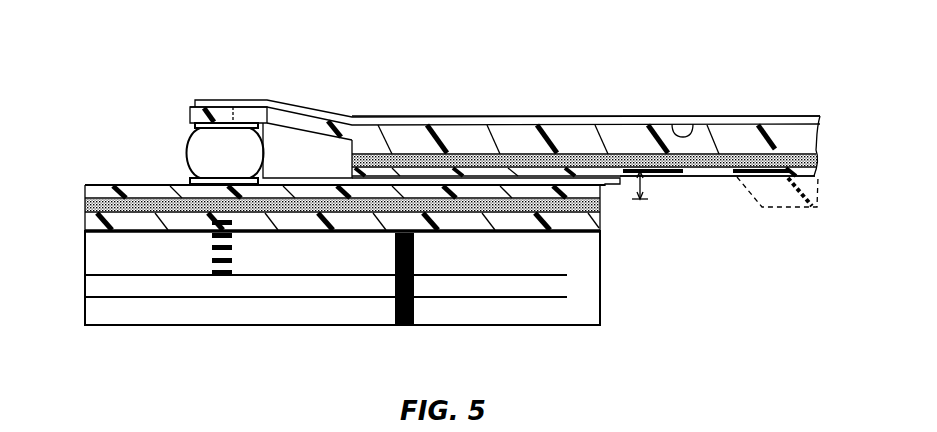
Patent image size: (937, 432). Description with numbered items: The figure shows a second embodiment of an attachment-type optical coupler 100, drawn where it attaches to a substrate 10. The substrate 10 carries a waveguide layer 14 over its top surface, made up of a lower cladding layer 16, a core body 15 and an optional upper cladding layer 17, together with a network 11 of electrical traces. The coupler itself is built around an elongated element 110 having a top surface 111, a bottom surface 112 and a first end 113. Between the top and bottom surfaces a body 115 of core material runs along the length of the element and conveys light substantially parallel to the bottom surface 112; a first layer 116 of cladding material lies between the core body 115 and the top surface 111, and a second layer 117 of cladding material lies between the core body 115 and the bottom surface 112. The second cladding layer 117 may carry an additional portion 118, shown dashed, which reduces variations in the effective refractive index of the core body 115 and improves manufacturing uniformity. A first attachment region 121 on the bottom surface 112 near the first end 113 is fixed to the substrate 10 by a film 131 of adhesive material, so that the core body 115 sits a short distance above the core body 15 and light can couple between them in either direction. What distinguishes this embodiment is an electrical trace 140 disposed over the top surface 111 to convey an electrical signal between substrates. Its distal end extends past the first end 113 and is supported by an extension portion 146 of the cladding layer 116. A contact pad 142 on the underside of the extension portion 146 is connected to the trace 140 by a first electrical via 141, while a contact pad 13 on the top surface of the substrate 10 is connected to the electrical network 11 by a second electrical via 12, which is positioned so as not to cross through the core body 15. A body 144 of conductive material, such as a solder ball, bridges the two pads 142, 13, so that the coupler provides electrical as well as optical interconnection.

The optical coupler 100 is at (137, 67).
The substrate 10 is at (413, 325).
The network of electrical traces 11 is at (223, 297).
The second electrical via 12 is at (233, 248).
The contact pad 13 is at (190, 183).
The waveguide layer 14 is at (85, 230).
The core body 15 is at (100, 207).
The lower cladding layer 16 is at (90, 221).
The upper cladding layer 17 is at (95, 192).
The element 110 is at (520, 142).
The top surface 111 is at (695, 123).
The bottom surface 112 is at (712, 178).
The first end 113 is at (348, 150).
The body of core material 115 is at (817, 160).
The first layer of cladding material 116 is at (812, 143).
The second layer of cladding material 117 is at (810, 173).
The additional portion 118 is at (785, 197).
The first attachment region 121 is at (355, 175).
The first film of adhesive material 131 is at (348, 180).
The electrical trace 140 is at (258, 97).
The first electrical via 141 is at (215, 110).
The contact pad 142 is at (197, 125).
The body of conductive material 144 is at (187, 152).
The extension portion 146 is at (287, 118).